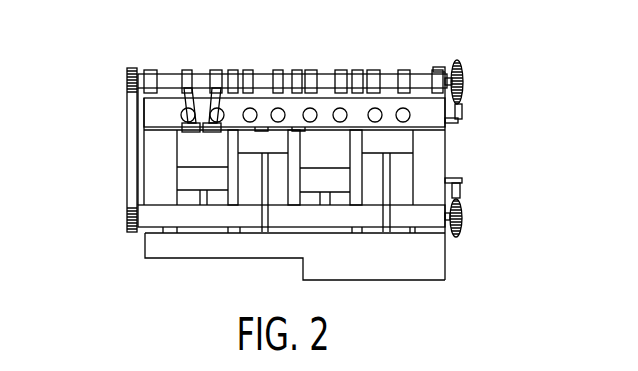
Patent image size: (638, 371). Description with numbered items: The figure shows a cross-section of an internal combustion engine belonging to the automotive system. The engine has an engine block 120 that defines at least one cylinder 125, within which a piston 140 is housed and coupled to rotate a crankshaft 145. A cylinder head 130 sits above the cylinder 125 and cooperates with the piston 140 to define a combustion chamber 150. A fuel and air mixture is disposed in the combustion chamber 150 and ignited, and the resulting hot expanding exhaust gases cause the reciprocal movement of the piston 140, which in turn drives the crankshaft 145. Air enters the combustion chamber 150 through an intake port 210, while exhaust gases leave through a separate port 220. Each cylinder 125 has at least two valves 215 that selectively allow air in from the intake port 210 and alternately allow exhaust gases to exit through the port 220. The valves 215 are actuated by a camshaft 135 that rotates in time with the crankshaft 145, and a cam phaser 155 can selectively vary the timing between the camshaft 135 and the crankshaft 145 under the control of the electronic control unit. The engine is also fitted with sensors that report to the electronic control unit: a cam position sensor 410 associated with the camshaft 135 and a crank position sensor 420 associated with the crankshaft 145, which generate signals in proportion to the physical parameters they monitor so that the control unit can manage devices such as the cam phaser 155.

The engine block 120 is at (143, 167).
The cylinder 125 is at (325, 138).
The cylinder head 130 is at (143, 122).
The camshaft 135 is at (200, 72).
The piston 140 is at (323, 180).
The crankshaft 145 is at (170, 217).
The combustion chamber 150 is at (403, 130).
The cam phaser 155 is at (127, 95).
The intake port 210 is at (300, 155).
The valves 215 is at (207, 128).
The exhaust port 220 is at (277, 108).
The cam position sensor 410 is at (460, 118).
The crank position sensor 420 is at (462, 185).